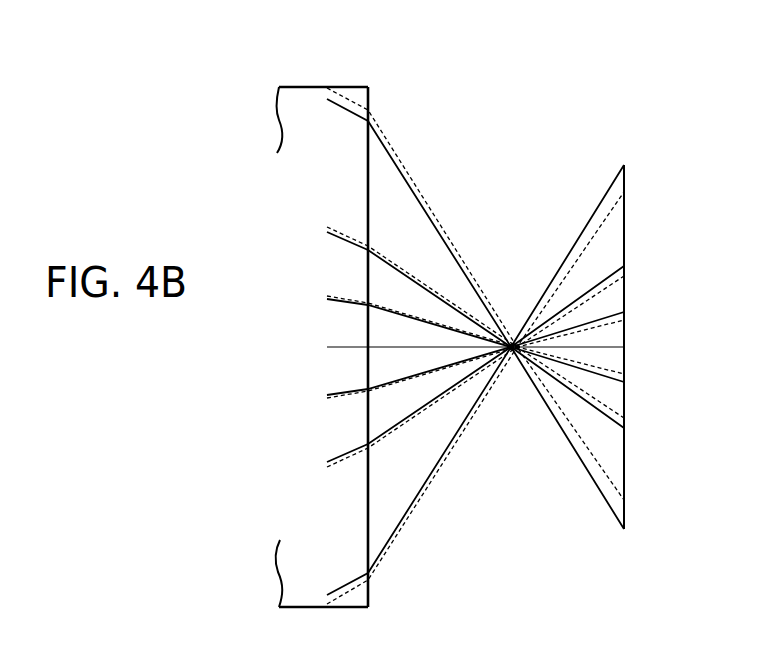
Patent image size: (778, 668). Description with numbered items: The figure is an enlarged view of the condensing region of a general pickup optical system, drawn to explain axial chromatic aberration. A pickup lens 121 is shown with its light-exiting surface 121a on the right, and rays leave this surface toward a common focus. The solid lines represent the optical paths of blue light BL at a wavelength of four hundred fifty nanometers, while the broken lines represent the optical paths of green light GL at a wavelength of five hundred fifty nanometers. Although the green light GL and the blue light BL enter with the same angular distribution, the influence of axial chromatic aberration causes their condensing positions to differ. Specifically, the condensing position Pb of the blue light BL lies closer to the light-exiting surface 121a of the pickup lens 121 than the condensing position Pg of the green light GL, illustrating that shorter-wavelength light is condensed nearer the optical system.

The pickup lens 121 is at (302, 97).
The light-exiting surface 121a is at (371, 95).
The blue light BL is at (412, 190).
The green light GL is at (463, 258).
The condensing position of the blue light Pb is at (509, 352).
The condensing position of the green light Pg is at (518, 352).